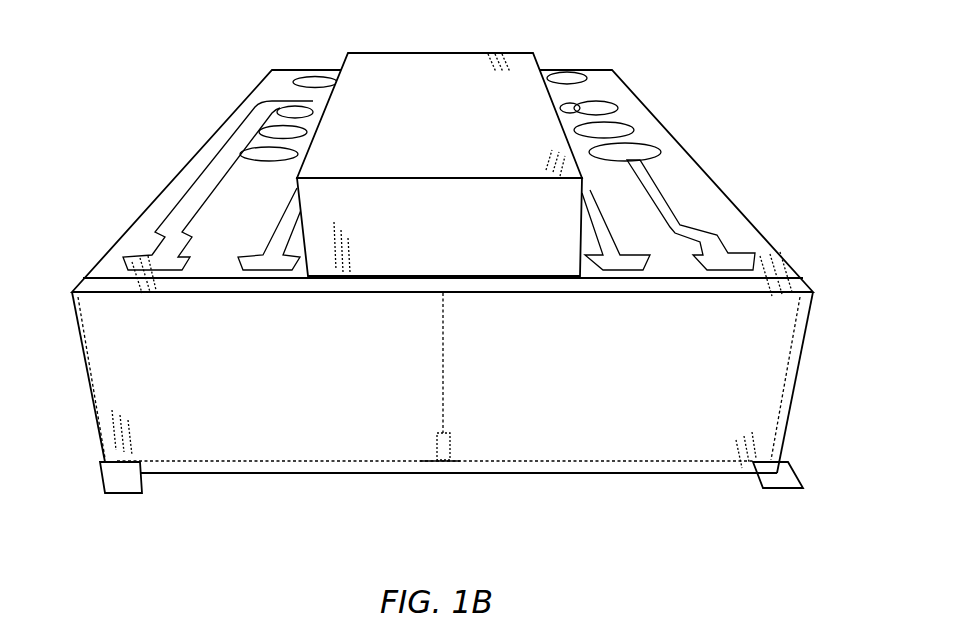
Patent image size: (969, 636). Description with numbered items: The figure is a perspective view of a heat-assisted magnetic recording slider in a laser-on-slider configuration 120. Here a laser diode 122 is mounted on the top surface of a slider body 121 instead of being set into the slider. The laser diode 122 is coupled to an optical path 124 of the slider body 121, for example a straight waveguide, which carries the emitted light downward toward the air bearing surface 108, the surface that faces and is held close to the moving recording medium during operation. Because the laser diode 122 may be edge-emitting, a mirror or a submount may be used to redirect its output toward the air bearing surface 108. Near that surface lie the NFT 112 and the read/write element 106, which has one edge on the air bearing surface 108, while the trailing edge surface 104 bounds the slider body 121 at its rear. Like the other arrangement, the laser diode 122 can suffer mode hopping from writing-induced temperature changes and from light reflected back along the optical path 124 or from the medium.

The laser-on-slider configuration 120 is at (721, 111).
The slider body 121 is at (117, 245).
The laser diode 122 is at (518, 60).
The optical path 124 is at (444, 361).
The read/write element 106 is at (449, 463).
The NFT 112 is at (435, 465).
The trailing edge surface 104 is at (128, 495).
The air bearing surface 108 is at (793, 490).